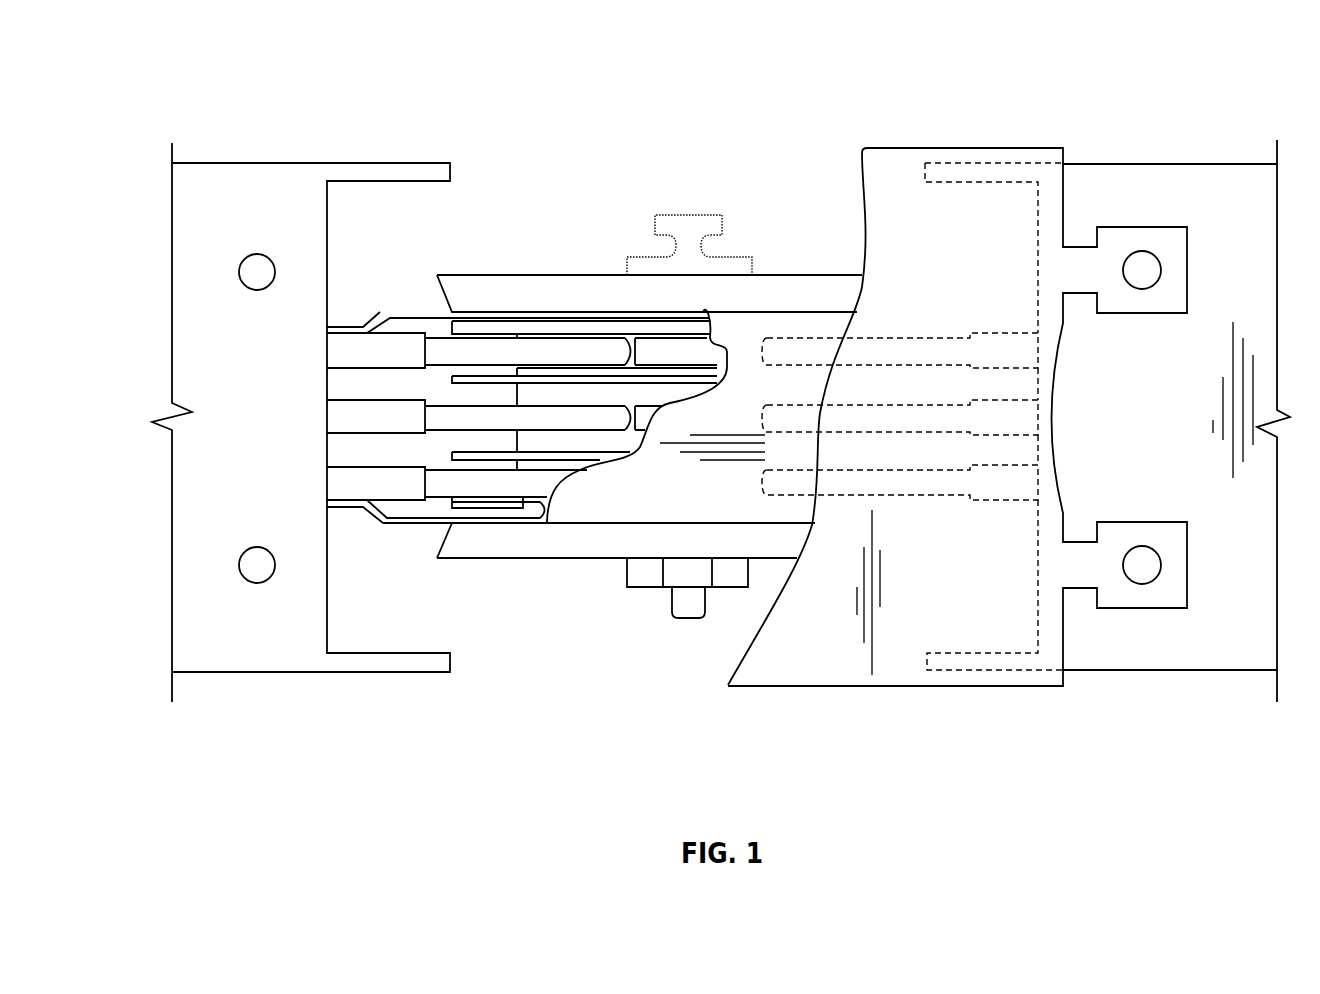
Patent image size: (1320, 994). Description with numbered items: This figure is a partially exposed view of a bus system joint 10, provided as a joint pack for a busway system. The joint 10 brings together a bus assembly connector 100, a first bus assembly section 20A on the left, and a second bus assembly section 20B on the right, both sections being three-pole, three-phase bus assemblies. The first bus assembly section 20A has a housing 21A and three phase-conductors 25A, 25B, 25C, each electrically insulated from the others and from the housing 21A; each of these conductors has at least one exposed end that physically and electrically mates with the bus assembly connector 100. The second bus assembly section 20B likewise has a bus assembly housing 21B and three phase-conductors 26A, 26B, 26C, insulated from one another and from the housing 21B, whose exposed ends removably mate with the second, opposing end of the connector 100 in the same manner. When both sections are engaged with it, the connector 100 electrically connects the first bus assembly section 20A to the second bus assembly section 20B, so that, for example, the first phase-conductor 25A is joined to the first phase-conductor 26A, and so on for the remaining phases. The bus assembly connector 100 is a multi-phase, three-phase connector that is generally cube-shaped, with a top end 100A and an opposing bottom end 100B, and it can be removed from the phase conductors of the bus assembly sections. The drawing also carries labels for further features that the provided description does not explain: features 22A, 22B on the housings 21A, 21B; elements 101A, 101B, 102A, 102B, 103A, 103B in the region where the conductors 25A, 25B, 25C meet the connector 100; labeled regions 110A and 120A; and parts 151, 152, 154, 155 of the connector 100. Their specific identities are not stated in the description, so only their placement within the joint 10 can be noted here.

The bus system joint 10 is at (493, 48).
The first bus assembly section 20A is at (268, 145).
The second bus assembly section 20B is at (1153, 145).
The housing 21A is at (250, 662).
The bus assembly housing 21B is at (1175, 662).
The first bus bar mounting hole 22A is at (250, 272).
The second bus bar mounting hole 22B is at (250, 566).
The first phase-conductor 25A is at (443, 352).
The phase-conductor 25B is at (438, 417).
The phase-conductor 25C is at (433, 490).
The first phase-conductor 26A is at (887, 337).
The phase-conductor 26B is at (852, 435).
The phase-conductor 26C is at (900, 495).
The bus assembly connector 100 is at (735, 163).
The top end 100A is at (431, 255).
The bottom end 100B is at (780, 572).
The first contact 101A is at (547, 335).
The second contact 101B is at (720, 368).
The first mating contact 102A is at (537, 397).
The second mating contact 102B is at (540, 437).
The first contact portion 103A is at (533, 463).
The second contact portion 103B is at (523, 500).
The connector body 110A is at (676, 505).
The receptacle housing 120A is at (998, 237).
The upper housing wall 151 is at (472, 285).
The lower housing wall 152 is at (453, 547).
The latch projection 154 is at (683, 603).
The housing ribs 155 is at (637, 575).